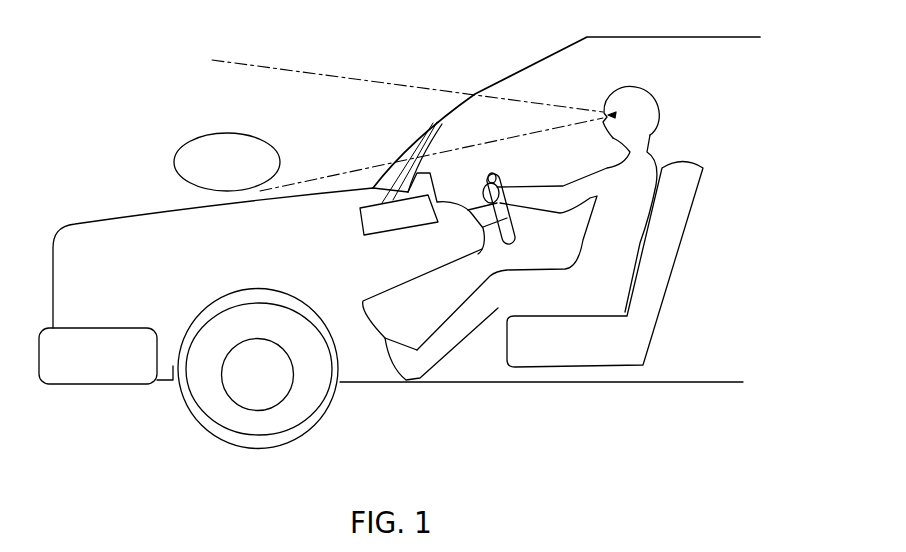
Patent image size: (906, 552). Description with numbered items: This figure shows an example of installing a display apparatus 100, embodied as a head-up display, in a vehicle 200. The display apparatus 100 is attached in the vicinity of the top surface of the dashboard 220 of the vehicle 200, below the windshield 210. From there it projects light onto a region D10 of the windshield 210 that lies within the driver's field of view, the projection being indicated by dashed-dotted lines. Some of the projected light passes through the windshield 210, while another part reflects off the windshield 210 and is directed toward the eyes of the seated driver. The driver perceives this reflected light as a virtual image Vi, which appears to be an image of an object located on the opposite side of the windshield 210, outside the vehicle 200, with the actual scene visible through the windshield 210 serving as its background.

The display apparatus 100 is at (368, 233).
The vehicle 200 is at (590, 383).
The windshield 210 is at (535, 60).
The dashboard 220 is at (458, 240).
The region D10 is at (403, 157).
The virtual image Vi is at (225, 132).